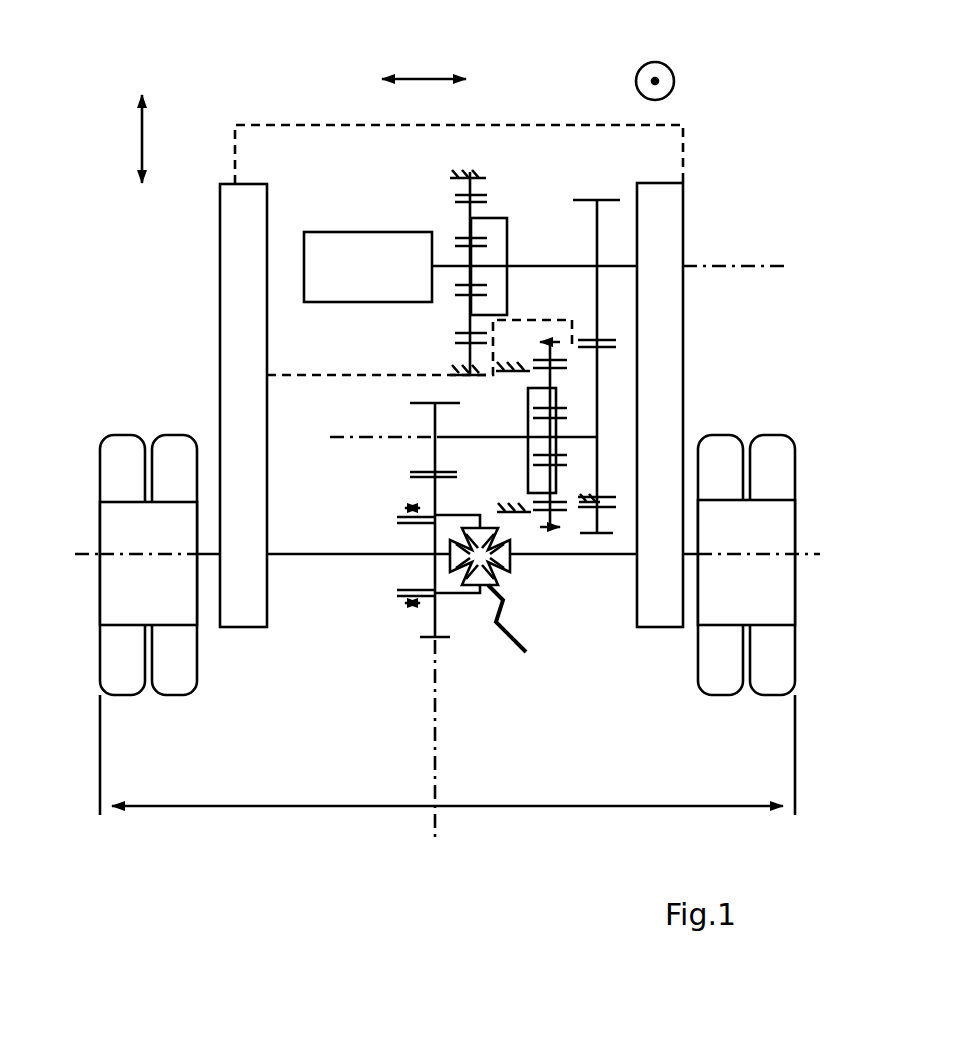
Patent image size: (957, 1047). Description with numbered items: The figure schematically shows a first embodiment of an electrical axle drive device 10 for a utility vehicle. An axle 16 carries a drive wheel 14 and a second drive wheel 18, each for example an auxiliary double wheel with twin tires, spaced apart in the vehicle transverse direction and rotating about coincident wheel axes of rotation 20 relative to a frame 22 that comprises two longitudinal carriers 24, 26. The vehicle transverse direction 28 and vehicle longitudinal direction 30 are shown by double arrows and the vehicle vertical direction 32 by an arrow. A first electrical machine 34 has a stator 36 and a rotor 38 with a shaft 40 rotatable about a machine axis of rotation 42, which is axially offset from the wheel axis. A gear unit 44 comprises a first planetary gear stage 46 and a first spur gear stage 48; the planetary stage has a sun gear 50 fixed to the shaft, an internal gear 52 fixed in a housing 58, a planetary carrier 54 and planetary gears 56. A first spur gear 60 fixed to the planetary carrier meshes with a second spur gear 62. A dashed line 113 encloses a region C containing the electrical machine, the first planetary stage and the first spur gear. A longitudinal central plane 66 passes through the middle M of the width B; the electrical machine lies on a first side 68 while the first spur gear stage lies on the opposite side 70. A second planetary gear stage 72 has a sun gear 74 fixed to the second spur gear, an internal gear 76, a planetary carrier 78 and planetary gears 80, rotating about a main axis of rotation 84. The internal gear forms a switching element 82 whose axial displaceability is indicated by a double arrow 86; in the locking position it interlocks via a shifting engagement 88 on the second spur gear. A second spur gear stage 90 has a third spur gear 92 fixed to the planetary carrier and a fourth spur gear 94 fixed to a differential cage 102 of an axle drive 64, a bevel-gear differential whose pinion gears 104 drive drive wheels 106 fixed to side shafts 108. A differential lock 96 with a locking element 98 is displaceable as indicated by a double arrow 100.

The electrical axle drive device 10 is at (670, 182).
The drive wheel 14 is at (95, 432).
The axle 16 is at (832, 540).
The second drive wheel 18 is at (802, 427).
The wheel axis of rotation 20 is at (88, 555).
The frame 22 is at (682, 242).
The longitudinal carrier 24 is at (233, 262).
The longitudinal carrier 26 is at (683, 325).
The vehicle transverse direction 28 is at (438, 78).
The vehicle longitudinal direction 30 is at (142, 135).
The vehicle vertical direction 32 is at (674, 81).
The first electrical machine 34 is at (348, 230).
The first stator 36 is at (355, 302).
The first rotor 38 is at (460, 336).
The shaft 40 is at (456, 264).
The machine axis of rotation 42 is at (765, 266).
The gear unit 44 is at (352, 493).
The first planetary gear stage 46 is at (510, 158).
The first spur gear stage 48 is at (598, 164).
The sun gear 50 is at (507, 264).
The internal gear 52 is at (480, 187).
The planetary carrier 54 is at (494, 218).
The first planetary gears 56 is at (470, 212).
The housing 58 is at (480, 376).
The first spur gear 60 is at (598, 238).
The second spur gear 62 is at (599, 403).
The axle drive 64 is at (478, 615).
The longitudinal central plane 66 is at (432, 724).
The first side 68 is at (362, 716).
The second side 70 is at (497, 752).
The second planetary gear stage 72 is at (560, 542).
The sun gear 74 is at (562, 396).
The internal gear 76 is at (605, 530).
The planetary carrier 78 is at (527, 458).
The planetary gears 80 is at (616, 345).
The switching element 82 is at (562, 336).
The main axis of rotation 84 is at (333, 438).
The double arrow 86 is at (550, 540).
The shifting engagement 88 is at (606, 494).
The second spur gear stage 90 is at (420, 650).
The third spur gear 92 is at (412, 403).
The fourth spur gear 94 is at (432, 616).
The differential lock 96 is at (385, 582).
The locking element 98 is at (398, 508).
The double arrow 100 is at (405, 505).
The differential cage 102 is at (462, 515).
The pinion gears 104 is at (536, 634).
The drive wheels 106 is at (437, 548).
The side shaft 108 is at (313, 556).
The line 113 is at (336, 125).
The region C is at (278, 140).
The middle M is at (430, 832).
The width B is at (612, 806).